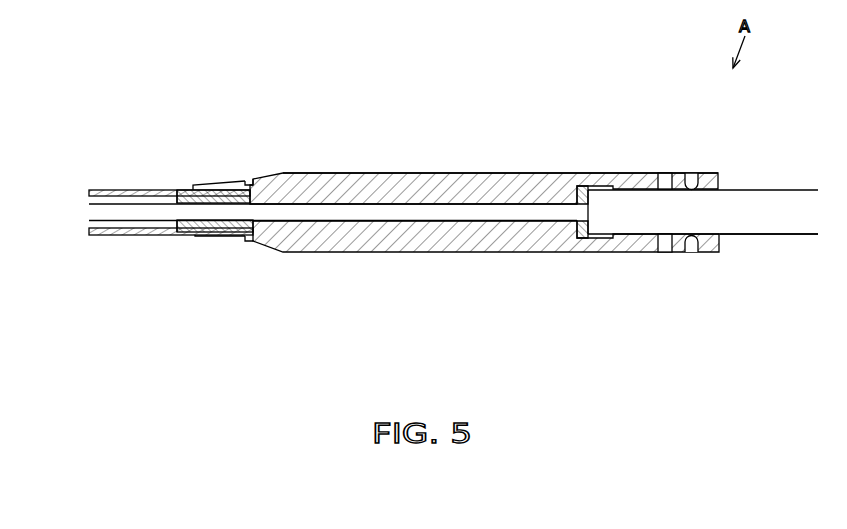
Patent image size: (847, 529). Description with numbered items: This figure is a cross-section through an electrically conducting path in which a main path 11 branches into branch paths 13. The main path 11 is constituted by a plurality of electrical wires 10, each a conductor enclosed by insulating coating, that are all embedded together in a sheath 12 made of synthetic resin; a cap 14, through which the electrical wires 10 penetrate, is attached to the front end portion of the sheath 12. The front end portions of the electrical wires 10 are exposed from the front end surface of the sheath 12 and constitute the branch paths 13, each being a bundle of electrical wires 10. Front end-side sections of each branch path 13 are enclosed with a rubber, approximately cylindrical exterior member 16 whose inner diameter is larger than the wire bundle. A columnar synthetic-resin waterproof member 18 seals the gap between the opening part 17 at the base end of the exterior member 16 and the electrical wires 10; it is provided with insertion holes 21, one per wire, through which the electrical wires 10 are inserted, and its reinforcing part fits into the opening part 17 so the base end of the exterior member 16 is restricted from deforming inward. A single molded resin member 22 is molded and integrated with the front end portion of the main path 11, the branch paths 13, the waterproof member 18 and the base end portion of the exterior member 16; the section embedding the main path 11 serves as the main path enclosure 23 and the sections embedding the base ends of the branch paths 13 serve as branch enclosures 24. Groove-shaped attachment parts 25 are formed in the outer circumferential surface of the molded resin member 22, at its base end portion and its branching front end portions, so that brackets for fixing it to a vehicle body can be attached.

The electrical wires 10 is at (413, 208).
The main path 11 is at (792, 172).
The sheath 12 is at (783, 236).
The branch paths 13 is at (193, 138).
The cap 14 is at (577, 236).
The exterior members 16 is at (112, 190).
The opening part 17 is at (277, 201).
The waterproof members 18 is at (212, 237).
The insertion holes 21 is at (182, 214).
The molded resin member 22 is at (476, 187).
The main path enclosure 23 is at (635, 180).
The branch enclosures 24 is at (283, 243).
The attachment parts 25 is at (258, 196).